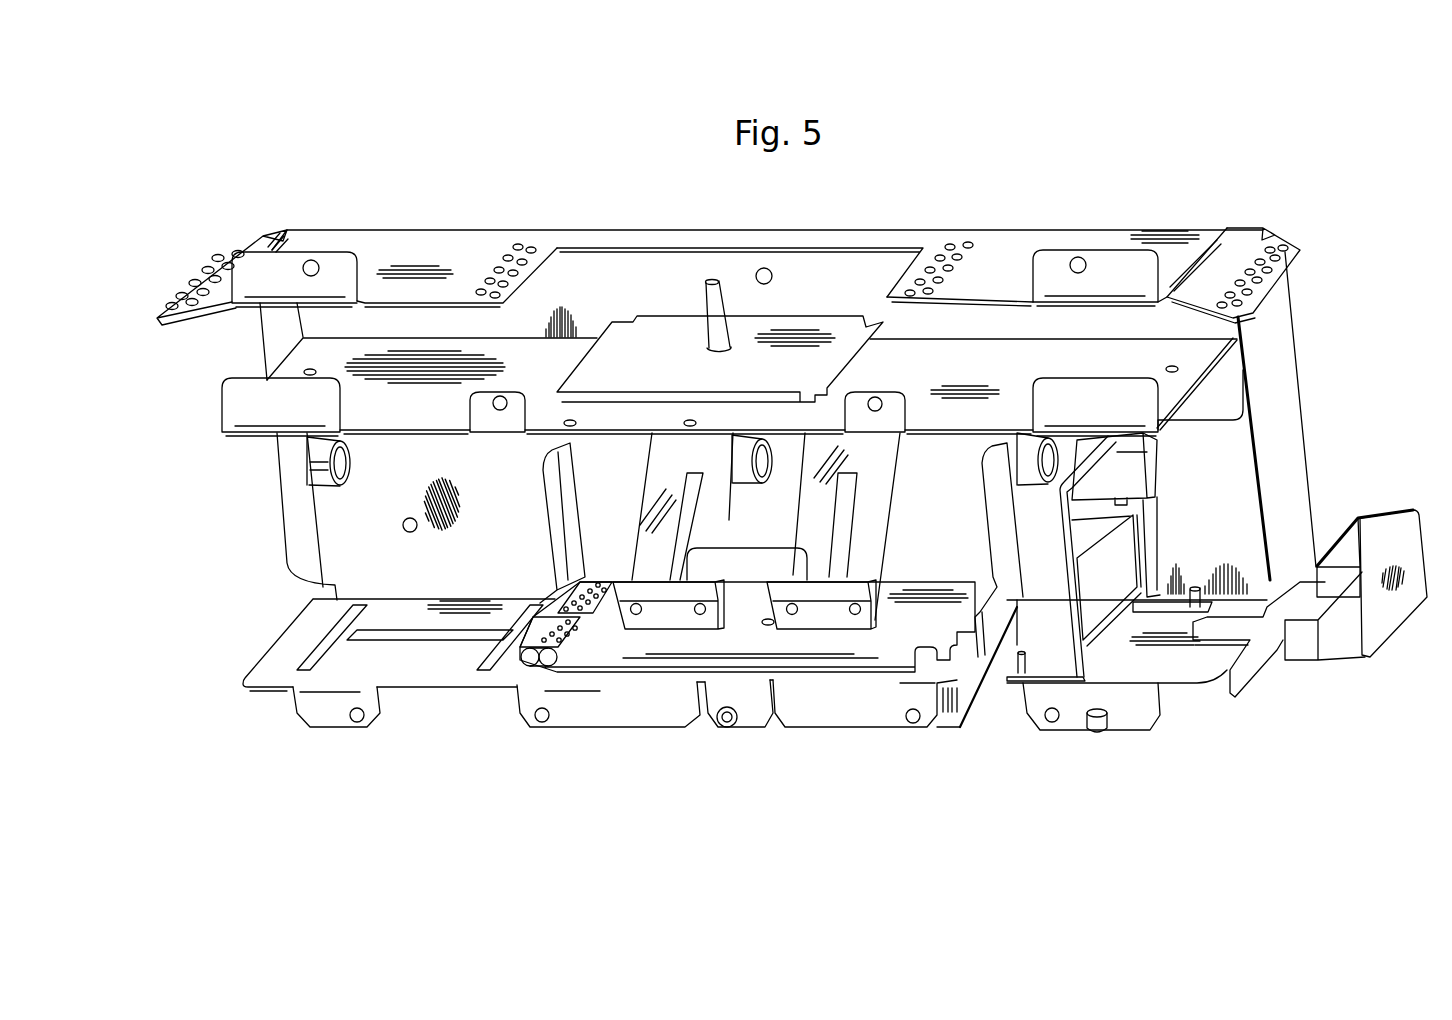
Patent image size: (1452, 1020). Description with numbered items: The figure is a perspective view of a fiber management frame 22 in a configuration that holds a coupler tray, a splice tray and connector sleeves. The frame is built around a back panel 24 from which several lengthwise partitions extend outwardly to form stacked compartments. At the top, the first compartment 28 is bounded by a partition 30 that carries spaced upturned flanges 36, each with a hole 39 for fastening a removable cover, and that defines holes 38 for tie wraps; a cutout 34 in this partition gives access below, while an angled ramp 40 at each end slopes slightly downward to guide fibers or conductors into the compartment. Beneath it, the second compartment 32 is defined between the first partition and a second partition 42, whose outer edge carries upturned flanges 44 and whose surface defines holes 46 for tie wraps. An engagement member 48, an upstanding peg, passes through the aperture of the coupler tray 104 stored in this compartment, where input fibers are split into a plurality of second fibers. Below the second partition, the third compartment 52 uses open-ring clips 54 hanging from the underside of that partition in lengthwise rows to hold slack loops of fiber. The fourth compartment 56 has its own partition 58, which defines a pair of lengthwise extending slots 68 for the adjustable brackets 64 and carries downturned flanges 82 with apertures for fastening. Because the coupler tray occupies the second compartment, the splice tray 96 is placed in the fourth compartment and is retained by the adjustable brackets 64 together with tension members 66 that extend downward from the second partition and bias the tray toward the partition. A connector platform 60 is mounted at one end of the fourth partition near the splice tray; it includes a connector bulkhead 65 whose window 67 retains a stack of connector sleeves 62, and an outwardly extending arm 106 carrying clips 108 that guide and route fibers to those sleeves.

The fiber management frame 22 is at (903, 158).
The back panel 24 is at (357, 552).
The first compartment 28 is at (458, 253).
The partition 30 is at (1130, 237).
The second compartment 32 is at (1162, 353).
The cutout 34 is at (608, 266).
The upturned flanges 36 is at (275, 268).
The holes 38 is at (518, 246).
The holes 39 is at (313, 258).
The angled ramp 40 is at (263, 243).
The partition 42 is at (1217, 368).
The upturned flanges 44 is at (240, 409).
The holes 46 is at (303, 373).
The engagement member 48 is at (722, 290).
The third compartment 52 is at (283, 456).
The clips 54 is at (346, 463).
The fourth compartment 56 is at (460, 564).
The partition 58 is at (460, 672).
The connector platform 60 is at (1177, 662).
The connector sleeves 62 is at (1137, 459).
The adjustable brackets 64 is at (545, 498).
The connector bulkhead 65 is at (1070, 637).
The tension members 66 is at (658, 457).
The window 67 is at (1078, 527).
The lengthwise extending slots 68 is at (412, 640).
The downturned flanges 82 is at (330, 716).
The splice tray 96 is at (914, 646).
The coupler tray 104 is at (672, 368).
The outwardly extending arm 106 is at (1377, 634).
The clips 108 is at (1368, 537).